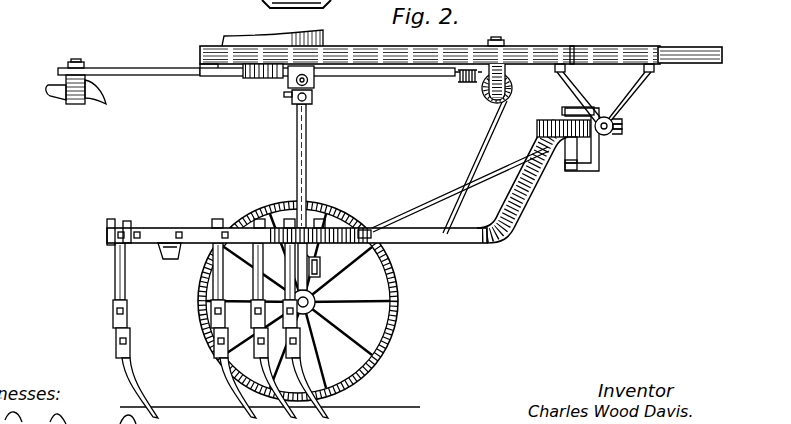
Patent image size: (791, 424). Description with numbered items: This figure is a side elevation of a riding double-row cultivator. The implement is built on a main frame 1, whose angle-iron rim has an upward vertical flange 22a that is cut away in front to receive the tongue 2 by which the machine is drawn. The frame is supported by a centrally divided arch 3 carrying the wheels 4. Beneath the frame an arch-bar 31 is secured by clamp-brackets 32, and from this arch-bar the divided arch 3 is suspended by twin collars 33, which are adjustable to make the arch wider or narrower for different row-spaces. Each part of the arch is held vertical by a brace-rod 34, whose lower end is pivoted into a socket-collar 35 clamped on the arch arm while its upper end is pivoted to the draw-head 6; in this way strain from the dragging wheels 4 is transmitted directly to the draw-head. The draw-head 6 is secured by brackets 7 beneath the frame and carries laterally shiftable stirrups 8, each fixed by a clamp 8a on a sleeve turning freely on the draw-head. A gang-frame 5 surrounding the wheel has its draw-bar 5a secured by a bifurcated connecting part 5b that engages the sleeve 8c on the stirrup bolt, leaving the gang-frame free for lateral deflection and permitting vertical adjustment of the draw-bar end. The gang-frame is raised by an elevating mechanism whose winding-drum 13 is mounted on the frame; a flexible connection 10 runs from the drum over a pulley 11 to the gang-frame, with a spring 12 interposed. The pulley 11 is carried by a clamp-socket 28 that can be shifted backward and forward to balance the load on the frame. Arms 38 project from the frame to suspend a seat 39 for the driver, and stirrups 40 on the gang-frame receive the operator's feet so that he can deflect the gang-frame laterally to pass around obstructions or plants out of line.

The main frame 1 is at (628, 47).
The tongue 2 is at (694, 47).
The arch 3 is at (308, 128).
The wheels 4 is at (398, 316).
The gang-frame 5 is at (330, 255).
The draw-bar 5a is at (522, 212).
The bifurcated connecting part 5b is at (567, 119).
The draw-head 6 is at (616, 133).
The brackets 7 is at (634, 90).
The stirrup 8 is at (600, 168).
The clamp 8a is at (622, 126).
The sleeve 8c is at (566, 166).
The flexible connection 10 is at (488, 133).
The pulley 11 is at (483, 100).
The spring 12 is at (461, 83).
The winding-drum 13 is at (229, 44).
The vertical flange 22a is at (572, 48).
The clamp-socket 28 is at (498, 40).
The arch-bar 31 is at (310, 82).
The clamp-brackets 32 is at (288, 83).
The twin collars 33 is at (312, 103).
The brace-rod 34 is at (437, 198).
The socket-collar 35 is at (321, 264).
The arms 38 is at (140, 64).
The seat 39 is at (47, 90).
The stirrups 40 is at (171, 259).